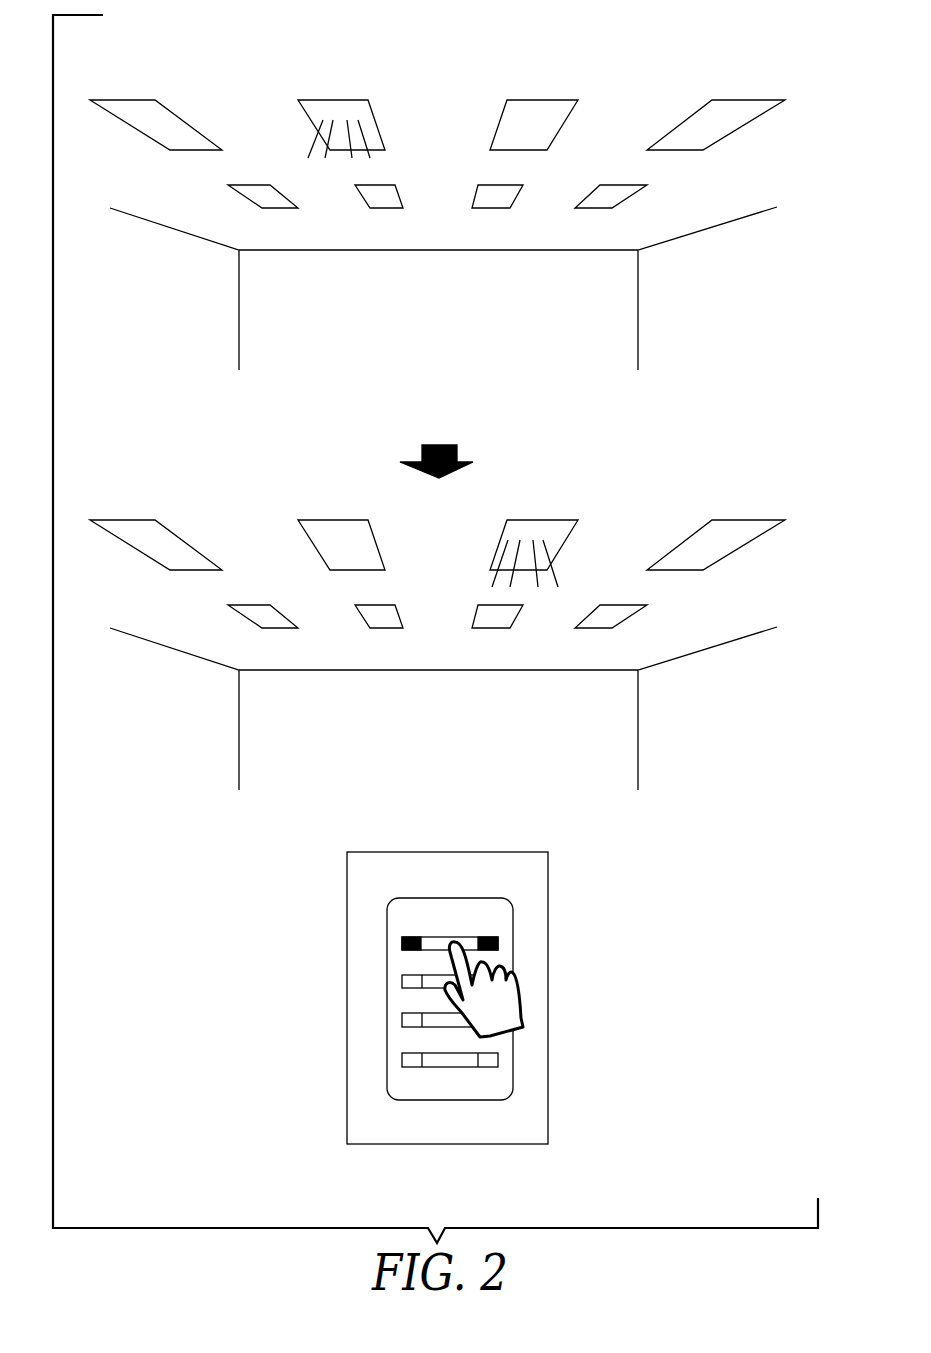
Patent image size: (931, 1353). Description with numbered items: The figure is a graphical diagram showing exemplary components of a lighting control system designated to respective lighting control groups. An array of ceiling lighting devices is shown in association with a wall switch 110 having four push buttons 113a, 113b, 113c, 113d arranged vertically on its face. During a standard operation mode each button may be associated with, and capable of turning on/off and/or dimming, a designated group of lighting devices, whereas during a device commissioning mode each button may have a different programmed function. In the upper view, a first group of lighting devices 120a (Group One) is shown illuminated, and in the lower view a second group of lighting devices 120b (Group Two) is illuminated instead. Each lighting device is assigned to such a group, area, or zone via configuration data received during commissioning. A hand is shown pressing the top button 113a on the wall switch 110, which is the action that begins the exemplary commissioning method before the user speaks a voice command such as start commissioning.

The wall switch 110 is at (347, 900).
The top button 113a is at (498, 942).
The push button 113b is at (402, 982).
The push button 113c is at (402, 1018).
The push button 113d is at (402, 1058).
The lighting device group 120a is at (377, 127).
The lighting device group 120b is at (570, 533).